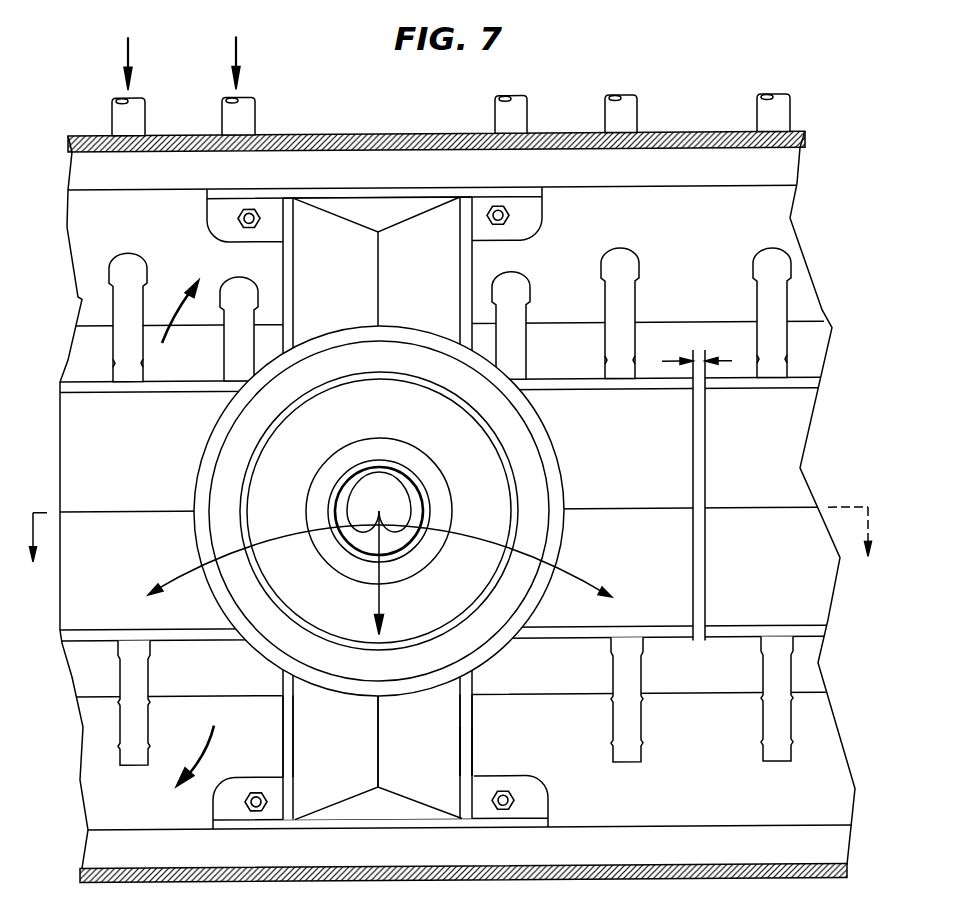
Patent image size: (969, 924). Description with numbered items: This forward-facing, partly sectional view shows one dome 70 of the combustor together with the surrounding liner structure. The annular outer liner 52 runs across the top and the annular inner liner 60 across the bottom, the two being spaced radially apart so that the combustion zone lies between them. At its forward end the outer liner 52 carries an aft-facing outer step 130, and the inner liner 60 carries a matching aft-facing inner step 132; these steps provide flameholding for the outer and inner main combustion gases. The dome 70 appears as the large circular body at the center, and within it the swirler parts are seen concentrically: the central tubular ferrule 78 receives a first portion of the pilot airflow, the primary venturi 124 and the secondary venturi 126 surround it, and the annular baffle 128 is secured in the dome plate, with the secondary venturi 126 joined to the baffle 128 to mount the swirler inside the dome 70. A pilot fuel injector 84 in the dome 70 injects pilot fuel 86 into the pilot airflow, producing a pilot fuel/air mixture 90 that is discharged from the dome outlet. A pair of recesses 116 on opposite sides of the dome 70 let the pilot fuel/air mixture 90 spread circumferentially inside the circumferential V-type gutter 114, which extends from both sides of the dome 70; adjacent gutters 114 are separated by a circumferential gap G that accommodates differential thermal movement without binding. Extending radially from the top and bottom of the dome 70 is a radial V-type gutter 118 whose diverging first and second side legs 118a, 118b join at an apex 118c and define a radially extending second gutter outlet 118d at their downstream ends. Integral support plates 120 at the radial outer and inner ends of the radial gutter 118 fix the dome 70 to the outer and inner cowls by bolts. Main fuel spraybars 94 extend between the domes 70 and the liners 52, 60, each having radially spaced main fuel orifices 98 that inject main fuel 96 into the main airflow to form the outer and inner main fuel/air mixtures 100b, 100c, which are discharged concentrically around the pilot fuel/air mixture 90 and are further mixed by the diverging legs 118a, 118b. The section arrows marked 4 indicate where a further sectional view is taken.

The outer liner 52 is at (372, 136).
The inner liner 60 is at (838, 879).
The dome 70 is at (556, 433).
The central tubular ferrule 78 is at (358, 490).
The pilot fuel injector 84 is at (256, 116).
The pilot fuel 86 is at (238, 62).
The pilot fuel/air mixture 90 is at (268, 549).
The main fuel spraybar 94 is at (146, 116).
The main fuel 96 is at (130, 62).
The main fuel orifice 98 is at (160, 707).
The outer main fuel/air mixture 100b is at (171, 334).
The inner main fuel/air mixture 100c is at (205, 757).
The circumferential V-type gutter 114 is at (57, 372).
The recess 116 is at (557, 529).
The radial V-type gutter 118 is at (270, 266).
The first side leg 118a is at (438, 708).
The second side leg 118b is at (298, 687).
The second leading edge 118c is at (378, 719).
The second gutter outlet 118d is at (455, 747).
The support plate 120 is at (536, 209).
The primary venturi 124 is at (422, 500).
The secondary venturi 126 is at (445, 537).
The annular baffle 128 is at (487, 488).
The outer step 130 is at (97, 182).
The inner step 132 is at (97, 850).
The circumferential gap G is at (736, 364).
The section line 4- 4 is at (452, 549).